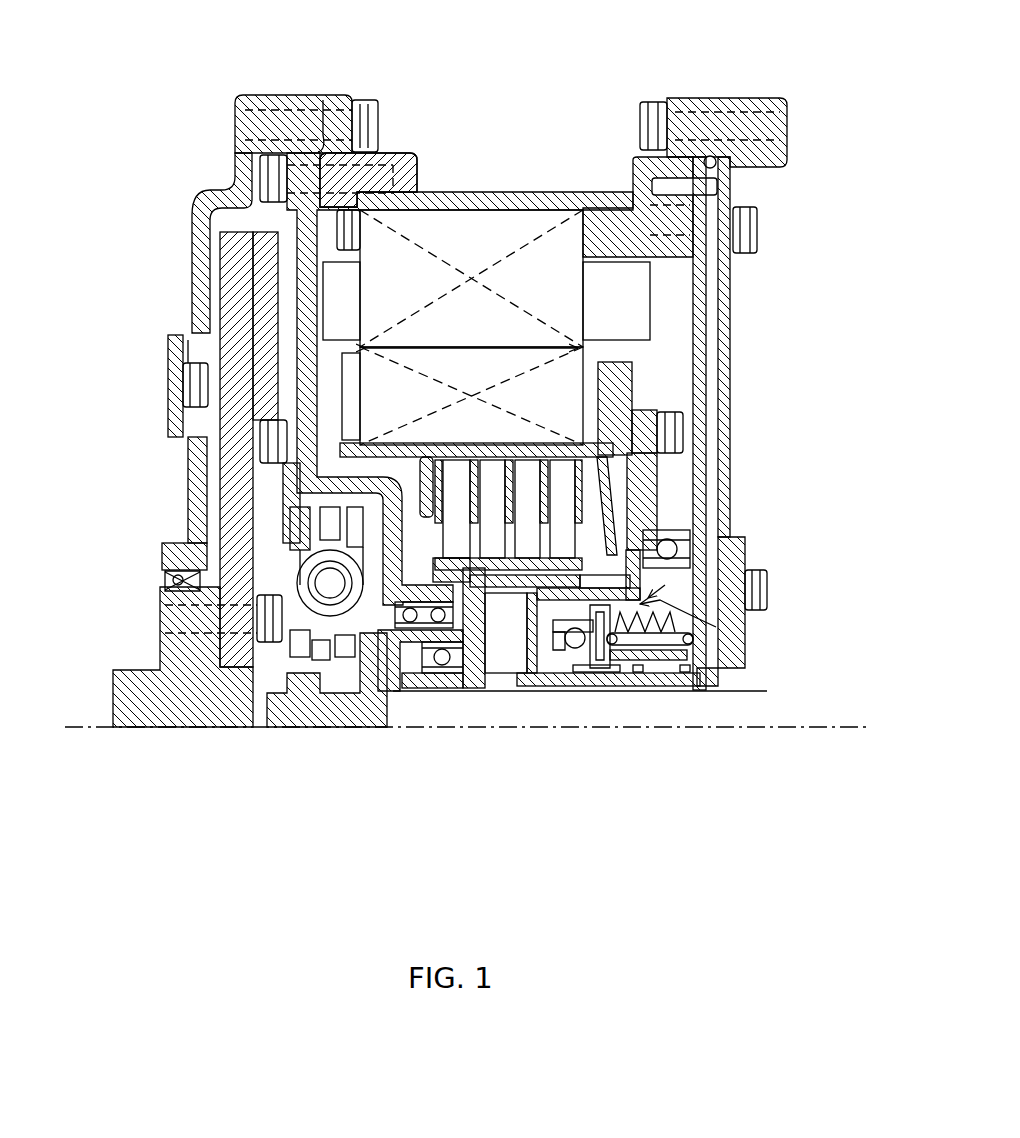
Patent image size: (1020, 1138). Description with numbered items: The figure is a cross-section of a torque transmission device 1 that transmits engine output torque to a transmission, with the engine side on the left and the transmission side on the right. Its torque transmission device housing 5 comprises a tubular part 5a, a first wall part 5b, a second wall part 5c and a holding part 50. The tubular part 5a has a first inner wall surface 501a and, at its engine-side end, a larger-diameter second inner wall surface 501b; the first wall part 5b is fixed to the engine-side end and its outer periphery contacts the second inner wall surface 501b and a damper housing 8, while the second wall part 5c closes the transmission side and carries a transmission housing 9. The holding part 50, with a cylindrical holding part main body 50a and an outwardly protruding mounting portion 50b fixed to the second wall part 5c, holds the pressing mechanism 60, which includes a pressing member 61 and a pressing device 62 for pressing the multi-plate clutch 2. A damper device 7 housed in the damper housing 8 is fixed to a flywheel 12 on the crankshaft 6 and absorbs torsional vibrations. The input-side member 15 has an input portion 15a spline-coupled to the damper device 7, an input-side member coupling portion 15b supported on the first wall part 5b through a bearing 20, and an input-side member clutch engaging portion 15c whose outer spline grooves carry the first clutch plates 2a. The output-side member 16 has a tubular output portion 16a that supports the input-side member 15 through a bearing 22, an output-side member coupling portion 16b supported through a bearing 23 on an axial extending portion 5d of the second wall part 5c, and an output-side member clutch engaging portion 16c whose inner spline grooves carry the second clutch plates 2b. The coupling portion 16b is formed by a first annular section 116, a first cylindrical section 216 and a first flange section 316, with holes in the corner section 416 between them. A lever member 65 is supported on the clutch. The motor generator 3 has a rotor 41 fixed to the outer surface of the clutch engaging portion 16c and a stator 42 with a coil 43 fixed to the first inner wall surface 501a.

The torque transmission device 1 is at (615, 72).
The multi-plate clutch 2 is at (430, 543).
The first clutch plate 2a is at (453, 497).
The second clutch plate 2b is at (433, 532).
The motor generator 3 is at (230, 337).
The torque transmission device housing 5 is at (525, 85).
The tubular part 5a is at (535, 195).
The first wall part 5b is at (300, 272).
The second wall part 5c is at (730, 380).
The axial extending portion 5d is at (727, 630).
The crankshaft 6 is at (138, 720).
The damper device 7 is at (270, 573).
The damper housing 8 is at (196, 232).
The transmission housing 9 is at (773, 158).
The flywheel 12 is at (333, 350).
The input-side member 15 is at (312, 737).
The input portion 15a is at (288, 712).
The input-side member coupling portion 15b is at (400, 690).
The input-side member clutch engaging portion 15c is at (310, 522).
The output-side member 16 is at (675, 475).
The output portion 16a is at (403, 643).
The output-side member coupling portion 16b is at (480, 630).
The output-side member clutch engaging portion 16c is at (523, 447).
The bearing 20 is at (260, 597).
The bearing 22 is at (452, 665).
The bearing 23 is at (660, 545).
The rotor 41 is at (457, 340).
The stator 42 is at (543, 263).
The coil 43 is at (622, 297).
The holding part 50 is at (757, 642).
The holding part main body 50a is at (650, 683).
The mounting portion 50b is at (740, 550).
The pressing mechanism 60 is at (610, 691).
The pressing member 61 is at (700, 688).
The pressing device 62 is at (583, 682).
The lever member 65 is at (627, 493).
The first annular section 116 is at (497, 600).
The first cylindrical section 216 is at (512, 583).
The first flange section 316 is at (670, 498).
The corner section 416 is at (760, 673).
The first inner wall surface 501a is at (480, 208).
The second inner wall surface 501b is at (323, 100).